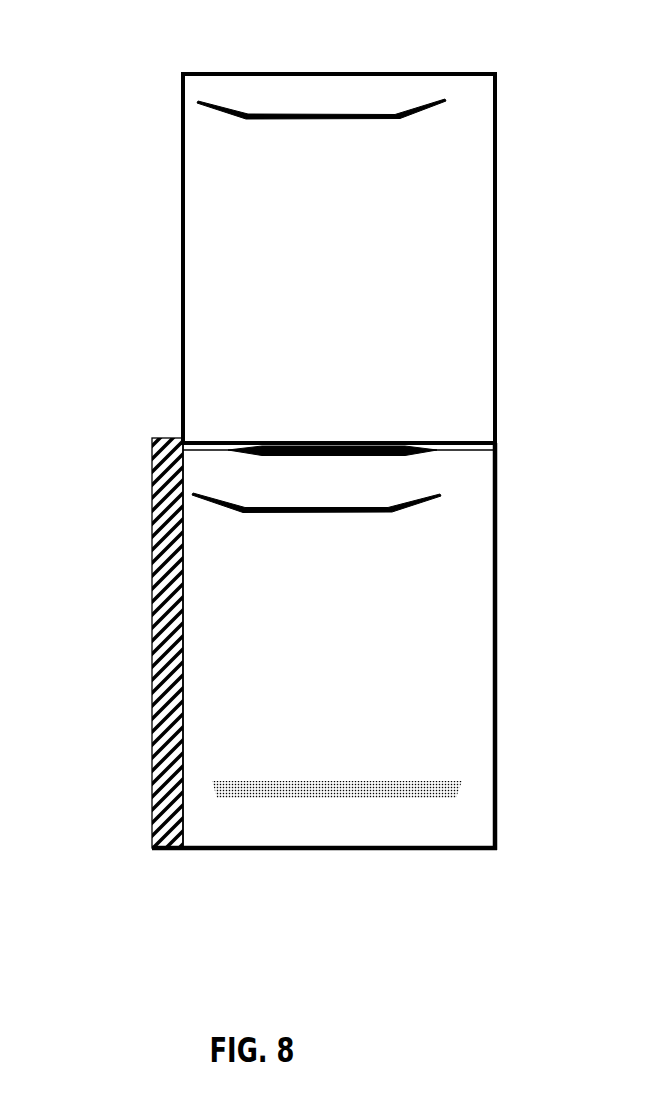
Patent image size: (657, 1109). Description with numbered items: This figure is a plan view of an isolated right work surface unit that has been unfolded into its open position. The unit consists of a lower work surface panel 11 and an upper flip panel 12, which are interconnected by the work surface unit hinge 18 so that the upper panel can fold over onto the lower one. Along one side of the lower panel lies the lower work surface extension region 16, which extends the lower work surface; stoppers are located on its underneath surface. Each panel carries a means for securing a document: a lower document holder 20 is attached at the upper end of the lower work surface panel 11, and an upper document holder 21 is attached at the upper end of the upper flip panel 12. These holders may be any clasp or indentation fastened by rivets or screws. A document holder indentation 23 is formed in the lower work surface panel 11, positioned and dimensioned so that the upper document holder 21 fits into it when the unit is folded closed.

The lower work surface panel 11 is at (481, 702).
The upper flip panel 12 is at (487, 98).
The lower work surface extension region 16 is at (152, 698).
The work surface unit hinge 18 is at (453, 449).
The lower document holder 20 is at (395, 510).
The upper document holder 21 is at (405, 117).
The document holder indentation 23 is at (453, 790).